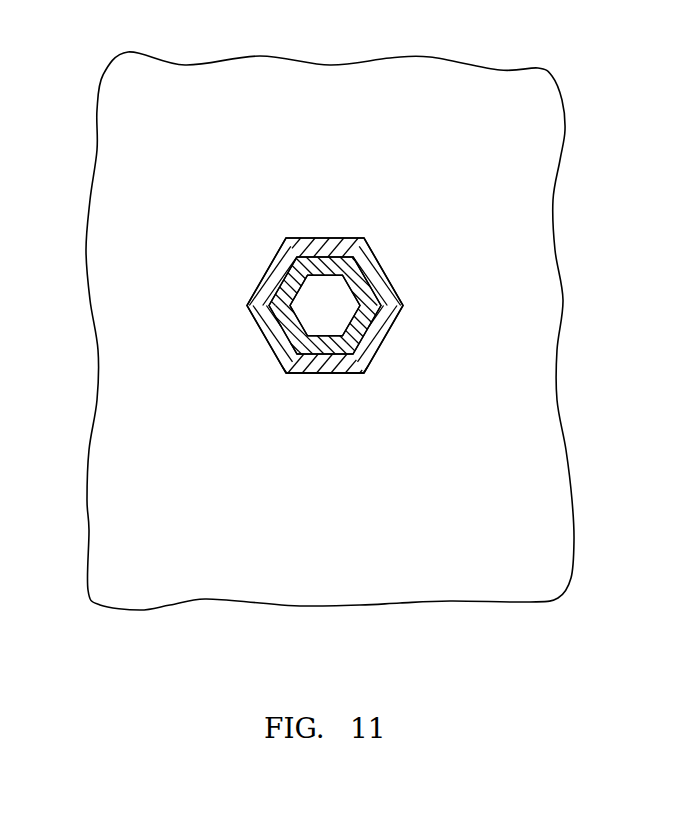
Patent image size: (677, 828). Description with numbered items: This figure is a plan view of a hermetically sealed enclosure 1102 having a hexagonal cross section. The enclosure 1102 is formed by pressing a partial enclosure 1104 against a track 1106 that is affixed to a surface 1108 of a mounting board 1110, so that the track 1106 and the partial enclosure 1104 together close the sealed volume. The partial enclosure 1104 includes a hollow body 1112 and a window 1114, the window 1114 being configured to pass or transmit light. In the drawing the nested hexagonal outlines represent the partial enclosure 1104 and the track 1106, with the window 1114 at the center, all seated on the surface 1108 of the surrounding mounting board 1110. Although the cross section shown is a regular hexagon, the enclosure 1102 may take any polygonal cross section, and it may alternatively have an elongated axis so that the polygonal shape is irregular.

The hermetically sealed enclosure 1102 is at (244, 350).
The partial enclosure 1104 is at (322, 257).
The track 1106 is at (348, 242).
The surface 1108 is at (452, 523).
The mounting board 1110 is at (561, 98).
The hollow body 1112 is at (323, 355).
The window 1114 is at (339, 300).